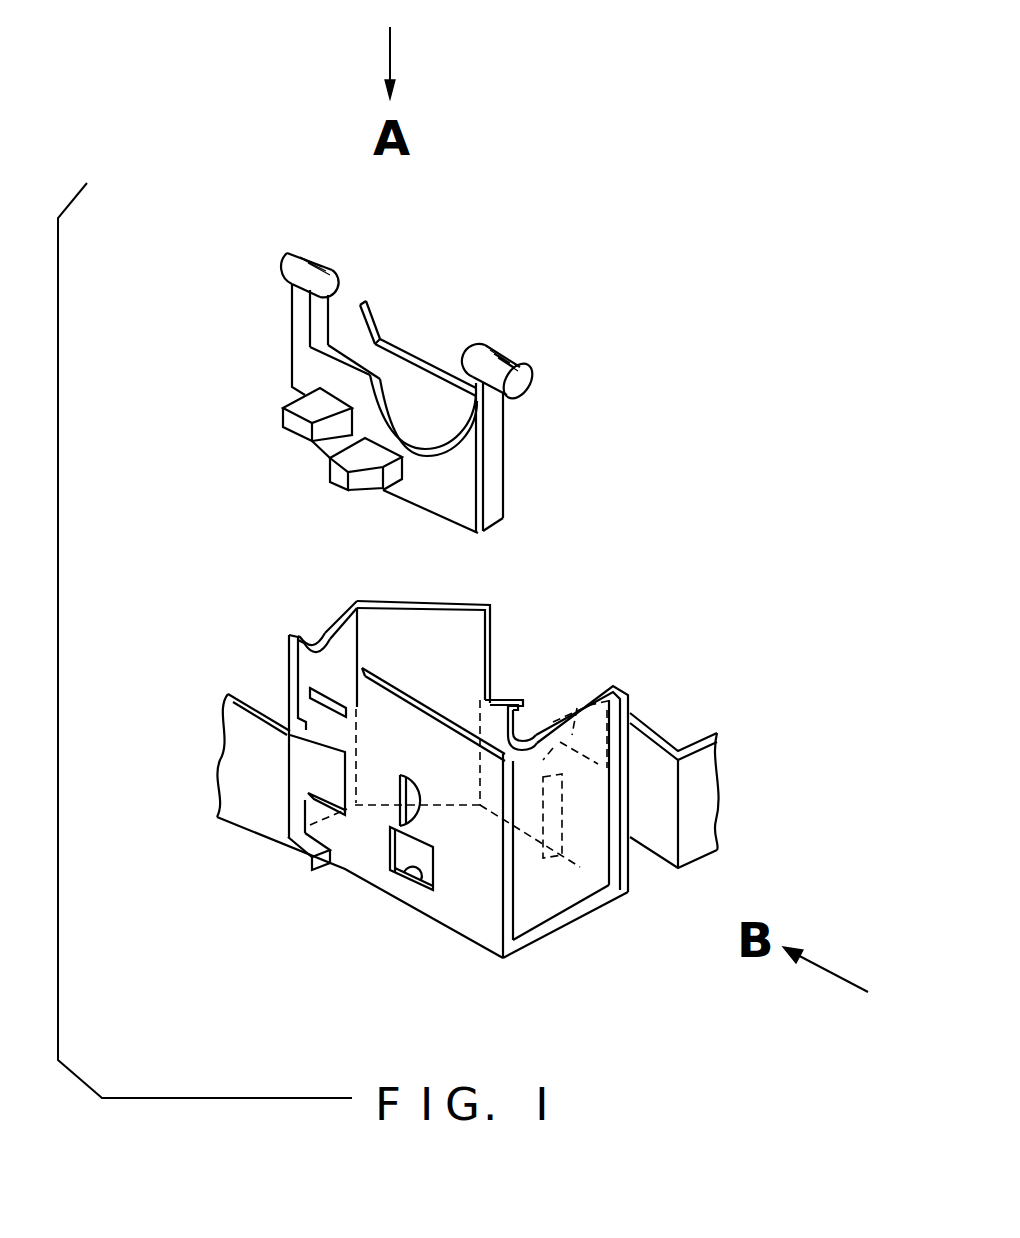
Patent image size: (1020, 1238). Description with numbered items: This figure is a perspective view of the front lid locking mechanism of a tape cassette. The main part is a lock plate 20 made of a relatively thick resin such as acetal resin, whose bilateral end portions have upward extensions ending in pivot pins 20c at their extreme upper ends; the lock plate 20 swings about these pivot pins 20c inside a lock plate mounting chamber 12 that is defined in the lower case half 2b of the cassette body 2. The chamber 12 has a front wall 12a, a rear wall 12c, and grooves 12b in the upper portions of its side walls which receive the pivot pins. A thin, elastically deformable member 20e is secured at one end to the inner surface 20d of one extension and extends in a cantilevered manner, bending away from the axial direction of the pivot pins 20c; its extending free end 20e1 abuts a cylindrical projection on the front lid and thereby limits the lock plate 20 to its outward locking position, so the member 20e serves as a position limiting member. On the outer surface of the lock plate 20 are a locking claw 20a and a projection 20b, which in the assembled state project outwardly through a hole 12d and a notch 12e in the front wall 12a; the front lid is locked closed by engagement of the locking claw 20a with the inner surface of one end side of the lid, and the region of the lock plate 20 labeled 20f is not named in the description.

The cassette body 2 is at (645, 403).
The lower case half 2b is at (705, 792).
The lock plate mounting chamber 12 is at (462, 645).
The front wall 12a is at (405, 700).
The grooves 12b is at (313, 633).
The rear wall 12c is at (593, 842).
The hole 12d is at (397, 877).
The notch 12e is at (343, 805).
The lock plate 20 is at (291, 342).
The locking claw 20a is at (340, 477).
The projection 20b is at (283, 424).
The pivot pins 20c is at (300, 252).
The inner surface 20d is at (505, 459).
The position limiting member 20e is at (413, 347).
The extending free end 20e1 is at (368, 303).
The plate portion 20f is at (450, 500).